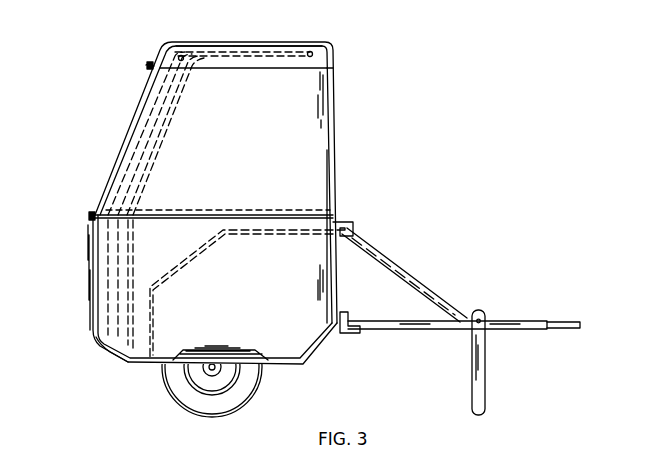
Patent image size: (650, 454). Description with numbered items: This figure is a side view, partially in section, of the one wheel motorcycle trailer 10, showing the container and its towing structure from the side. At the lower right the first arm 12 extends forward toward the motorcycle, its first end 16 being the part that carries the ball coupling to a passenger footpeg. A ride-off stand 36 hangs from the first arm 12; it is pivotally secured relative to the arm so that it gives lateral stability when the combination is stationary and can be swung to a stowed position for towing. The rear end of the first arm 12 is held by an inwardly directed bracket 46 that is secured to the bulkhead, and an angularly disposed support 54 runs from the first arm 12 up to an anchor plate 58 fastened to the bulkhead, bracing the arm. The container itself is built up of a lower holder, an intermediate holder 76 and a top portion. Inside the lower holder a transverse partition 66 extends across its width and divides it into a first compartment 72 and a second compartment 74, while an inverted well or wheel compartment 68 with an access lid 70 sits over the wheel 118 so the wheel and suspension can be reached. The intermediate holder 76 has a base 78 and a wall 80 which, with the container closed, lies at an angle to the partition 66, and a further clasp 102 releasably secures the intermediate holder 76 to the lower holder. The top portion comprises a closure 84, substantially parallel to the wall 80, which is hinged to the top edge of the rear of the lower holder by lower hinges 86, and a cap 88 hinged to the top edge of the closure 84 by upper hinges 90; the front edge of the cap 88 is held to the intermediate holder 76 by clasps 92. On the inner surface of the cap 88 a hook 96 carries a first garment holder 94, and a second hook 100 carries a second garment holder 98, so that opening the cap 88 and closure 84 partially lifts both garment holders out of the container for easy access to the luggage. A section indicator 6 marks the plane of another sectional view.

The trailer 10 is at (412, 222).
The first arm 12 is at (442, 330).
The first end 16 is at (567, 330).
The ride-off stand 36 is at (487, 370).
The bracket 46 is at (350, 333).
The support 54 is at (432, 282).
The anchor plate 58 is at (355, 224).
The transverse partition 66 is at (128, 287).
The wheel compartment 68 is at (134, 352).
The access lid 70 is at (195, 262).
The first compartment 72 is at (100, 312).
The second compartment 74 is at (148, 250).
The intermediate holder 76 is at (315, 129).
The base 78 is at (226, 209).
The wall 80 is at (128, 160).
The closure 84 is at (138, 100).
The lower hinges 86 is at (89, 214).
The cap 88 is at (232, 45).
The upper hinges 90 is at (150, 62).
The clasps 92 is at (337, 74).
The first garment holder 94 is at (130, 138).
The hook 96 is at (183, 55).
The second garment holder 98 is at (282, 50).
The second hook 100 is at (317, 56).
The further clasp 102 is at (340, 198).
The wheel 118 is at (260, 378).
The section line 6 is at (133, 438).